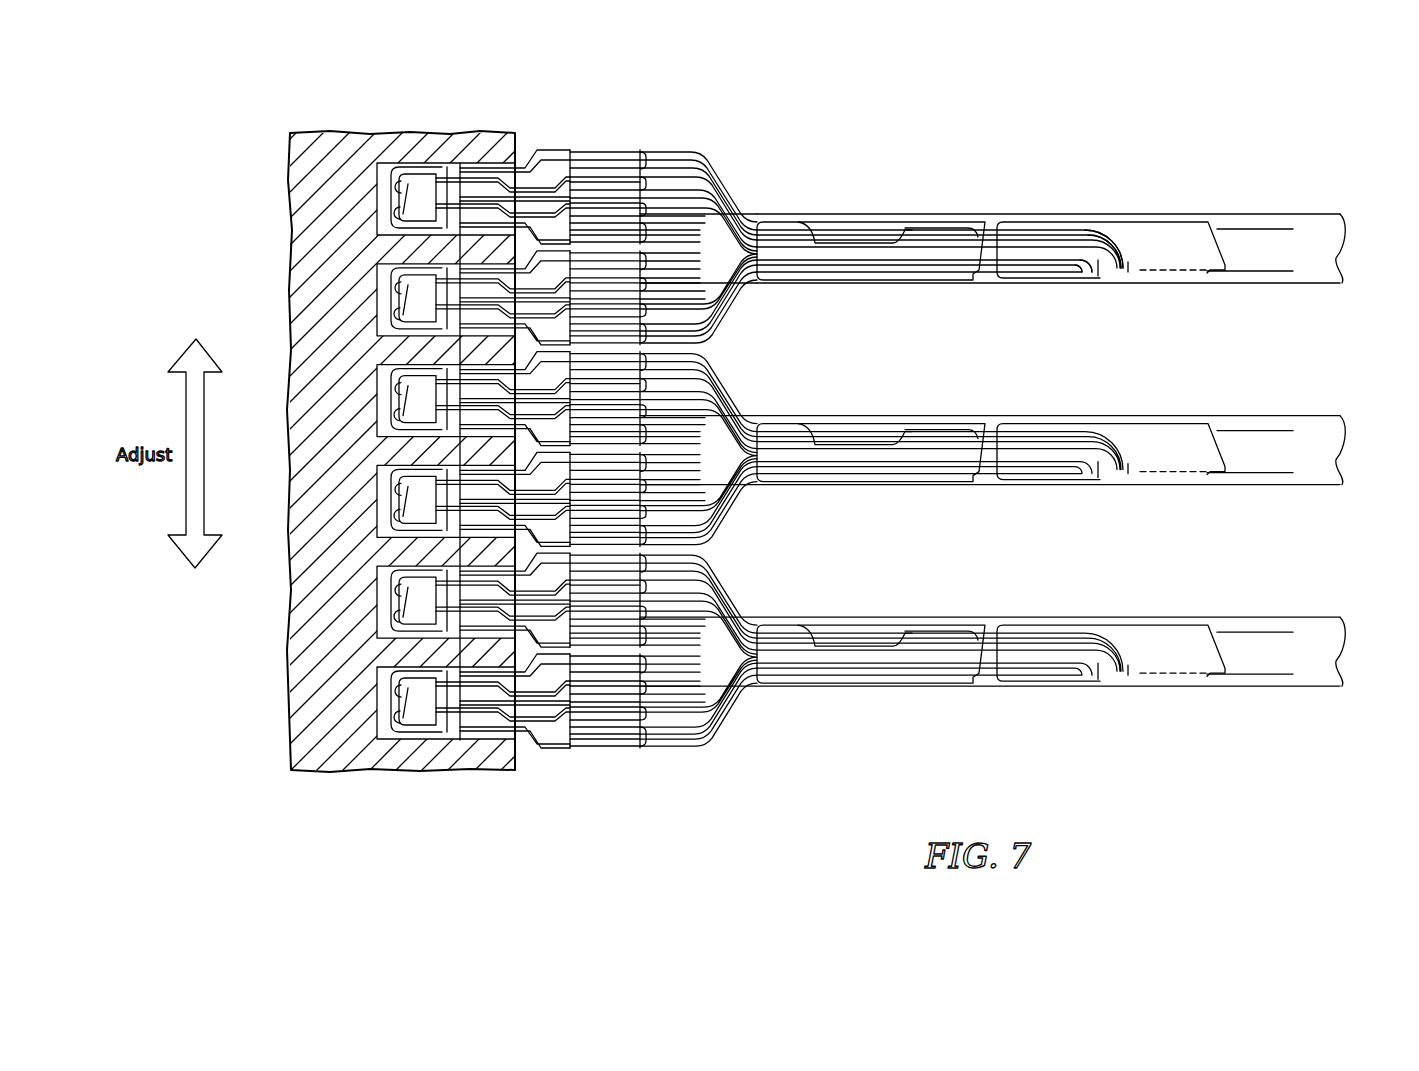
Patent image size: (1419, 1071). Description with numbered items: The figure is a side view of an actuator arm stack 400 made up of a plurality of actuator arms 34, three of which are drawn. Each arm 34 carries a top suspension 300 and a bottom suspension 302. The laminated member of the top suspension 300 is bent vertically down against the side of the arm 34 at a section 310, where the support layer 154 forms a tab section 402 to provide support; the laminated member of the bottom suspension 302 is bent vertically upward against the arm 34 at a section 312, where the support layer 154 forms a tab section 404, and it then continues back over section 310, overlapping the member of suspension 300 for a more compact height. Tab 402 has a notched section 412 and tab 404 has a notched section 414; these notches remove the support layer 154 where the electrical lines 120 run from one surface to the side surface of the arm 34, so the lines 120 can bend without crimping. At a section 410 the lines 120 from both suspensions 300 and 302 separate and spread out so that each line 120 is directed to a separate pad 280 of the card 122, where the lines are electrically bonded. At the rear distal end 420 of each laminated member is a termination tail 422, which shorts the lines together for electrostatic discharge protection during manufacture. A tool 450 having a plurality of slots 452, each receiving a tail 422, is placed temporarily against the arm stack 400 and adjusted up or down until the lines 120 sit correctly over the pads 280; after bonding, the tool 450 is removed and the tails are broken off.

The actuator arm 34 is at (1337, 258).
The electrical lines 120 is at (720, 178).
The card 122 is at (598, 150).
The support layer 154 is at (797, 218).
The pad 280 is at (622, 152).
The top suspension 300 is at (940, 222).
The bottom suspension 302 is at (1215, 272).
The section 310 is at (757, 309).
The section 312 is at (995, 309).
The actuator arm stack 400 is at (866, 745).
The tab section 402 is at (812, 228).
The tab section 404 is at (1145, 228).
The section 410 is at (698, 117).
The notched section 412 is at (848, 226).
The notched section 414 is at (1108, 282).
The rear distal end 420 is at (380, 72).
The termination tail 422 is at (400, 390).
The tool 450 is at (297, 722).
The slot 452 is at (386, 175).